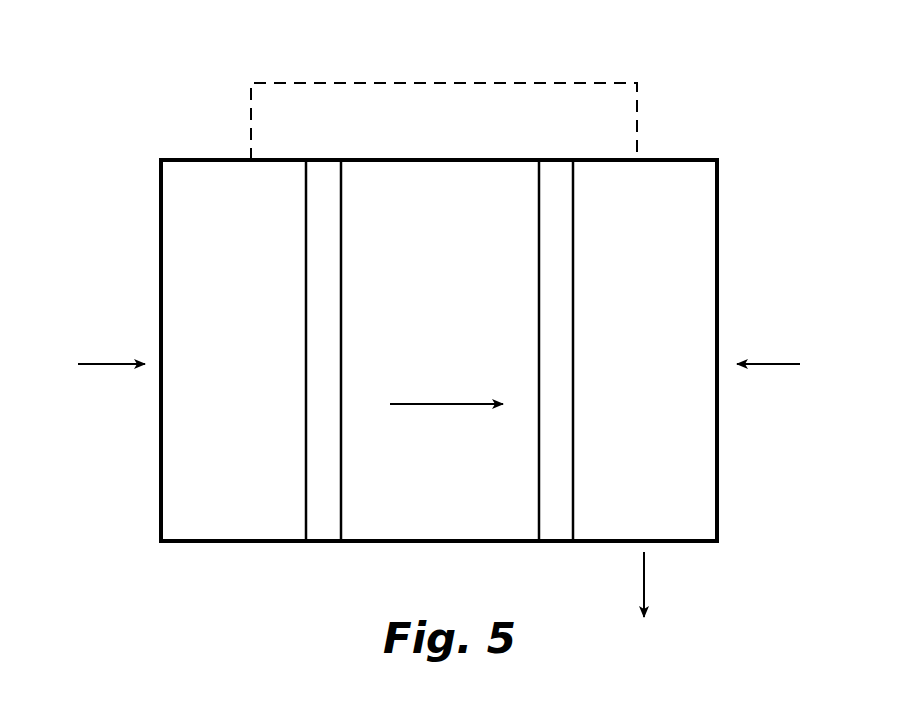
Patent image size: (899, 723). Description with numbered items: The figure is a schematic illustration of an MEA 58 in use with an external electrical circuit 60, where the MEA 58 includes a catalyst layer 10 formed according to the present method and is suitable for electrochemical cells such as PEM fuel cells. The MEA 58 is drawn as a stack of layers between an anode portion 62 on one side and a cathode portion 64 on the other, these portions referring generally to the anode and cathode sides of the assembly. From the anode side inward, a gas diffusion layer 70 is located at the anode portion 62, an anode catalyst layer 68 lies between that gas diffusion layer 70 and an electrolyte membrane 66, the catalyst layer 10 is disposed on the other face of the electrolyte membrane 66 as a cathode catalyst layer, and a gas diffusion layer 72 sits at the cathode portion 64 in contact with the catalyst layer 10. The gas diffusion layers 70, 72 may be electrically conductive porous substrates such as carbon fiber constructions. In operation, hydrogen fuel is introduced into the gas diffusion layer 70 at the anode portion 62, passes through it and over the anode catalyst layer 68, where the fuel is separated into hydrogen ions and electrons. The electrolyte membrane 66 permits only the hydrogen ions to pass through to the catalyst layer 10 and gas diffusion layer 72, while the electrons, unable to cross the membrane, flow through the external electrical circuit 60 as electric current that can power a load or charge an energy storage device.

The MEA 58 is at (155, 153).
The external electrical circuit 60 is at (618, 70).
The anode portion 62 is at (140, 470).
The cathode portion 64 is at (745, 470).
The electrolyte membrane 66 is at (457, 524).
The anode catalyst layer 68 is at (330, 247).
The gas diffusion layer 70 is at (236, 524).
The gas diffusion layer 72 is at (662, 524).
The catalyst layer 10 is at (553, 248).